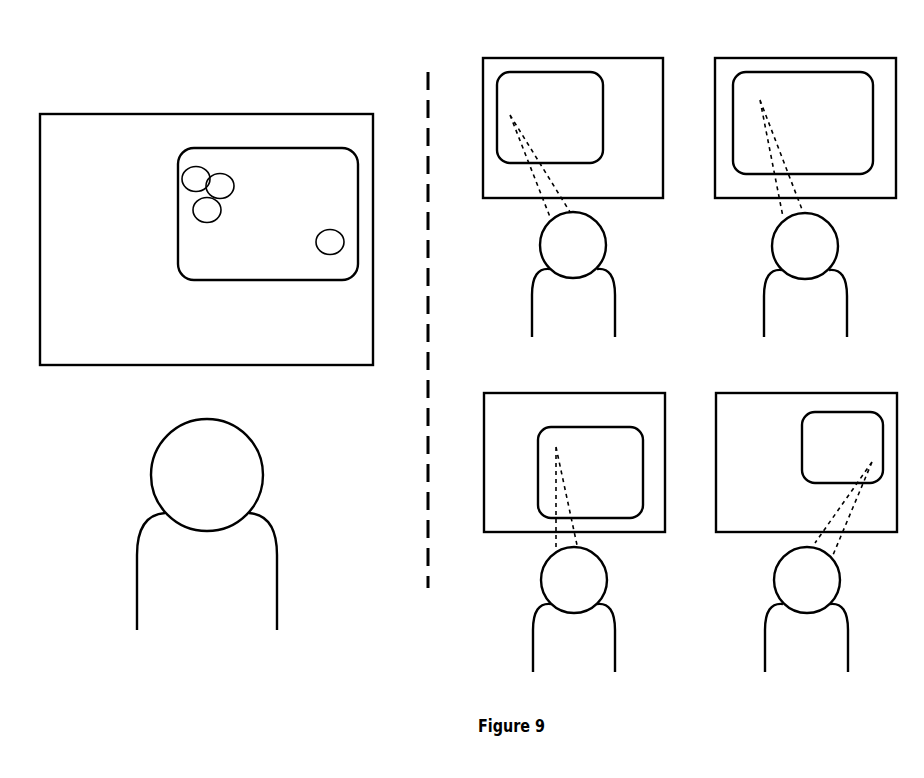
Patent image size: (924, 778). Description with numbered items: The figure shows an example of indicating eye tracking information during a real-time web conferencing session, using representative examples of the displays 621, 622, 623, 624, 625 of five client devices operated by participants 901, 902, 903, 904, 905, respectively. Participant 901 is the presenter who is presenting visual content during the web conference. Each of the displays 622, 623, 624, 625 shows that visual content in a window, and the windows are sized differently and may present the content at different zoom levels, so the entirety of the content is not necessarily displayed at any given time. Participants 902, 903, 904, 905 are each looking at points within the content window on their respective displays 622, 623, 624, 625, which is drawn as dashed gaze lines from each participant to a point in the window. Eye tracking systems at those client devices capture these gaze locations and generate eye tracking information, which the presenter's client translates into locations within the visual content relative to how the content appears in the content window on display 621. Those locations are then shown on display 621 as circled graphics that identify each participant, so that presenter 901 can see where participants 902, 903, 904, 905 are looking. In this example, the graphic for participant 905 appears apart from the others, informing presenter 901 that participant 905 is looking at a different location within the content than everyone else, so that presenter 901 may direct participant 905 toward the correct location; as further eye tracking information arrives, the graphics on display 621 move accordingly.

The display 621 is at (103, 102).
The participant 901 is at (151, 512).
The display 622 is at (513, 46).
The participant 902 is at (541, 270).
The display 623 is at (745, 46).
The participant 903 is at (773, 270).
The display 624 is at (514, 380).
The participant 904 is at (542, 604).
The display 625 is at (745, 380).
The participant 905 is at (774, 604).